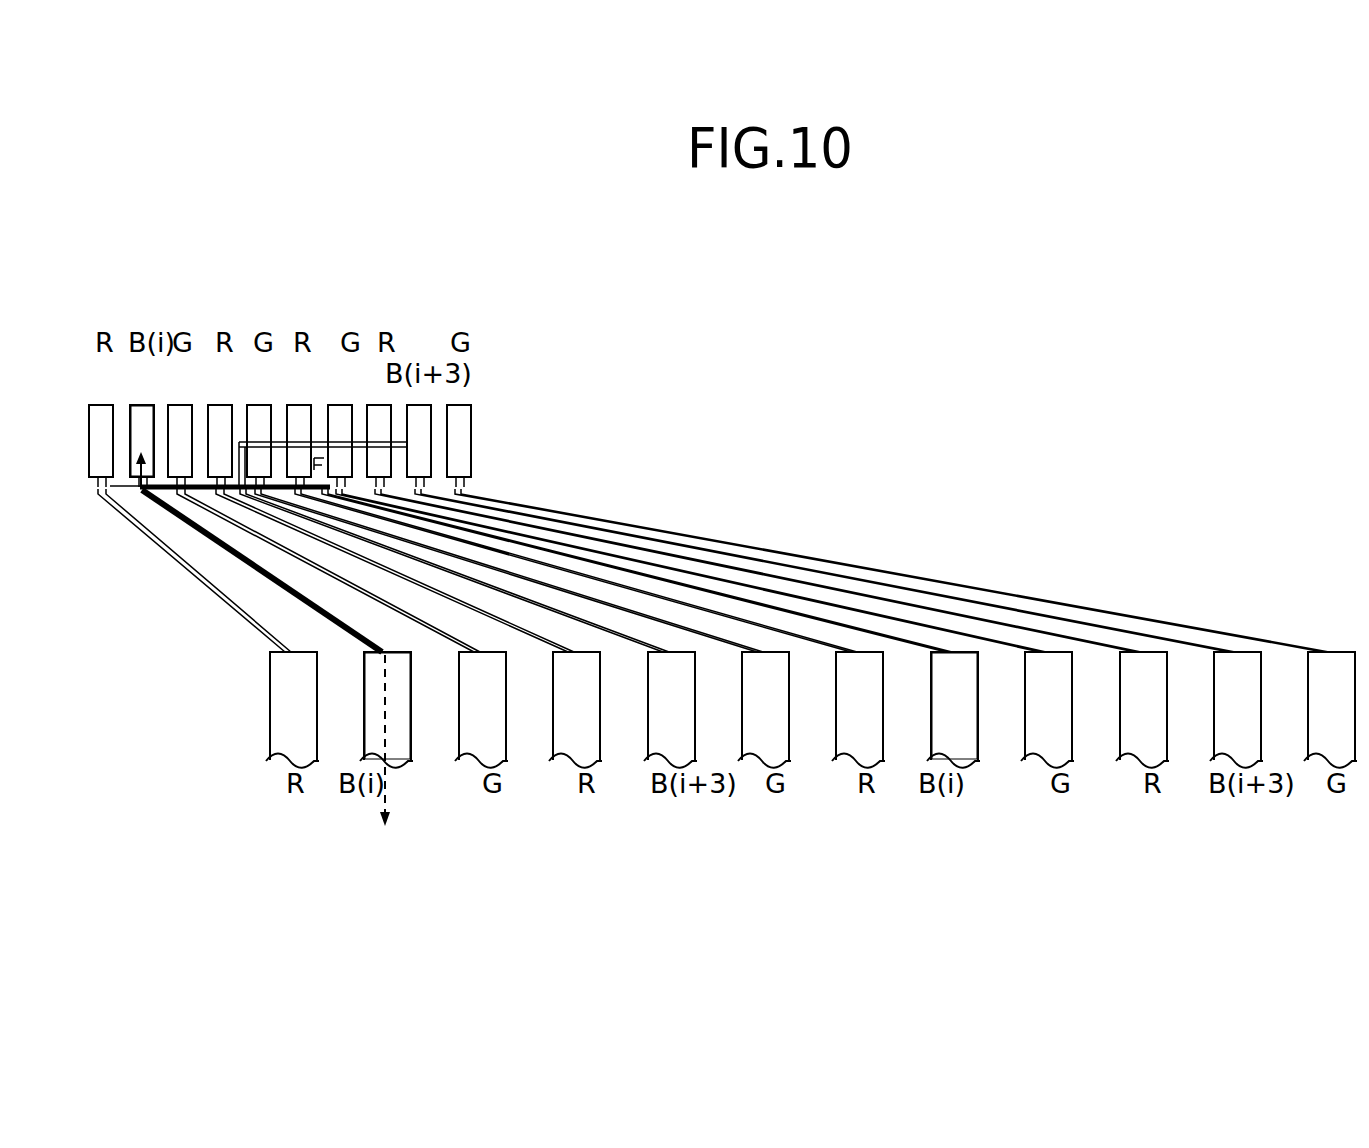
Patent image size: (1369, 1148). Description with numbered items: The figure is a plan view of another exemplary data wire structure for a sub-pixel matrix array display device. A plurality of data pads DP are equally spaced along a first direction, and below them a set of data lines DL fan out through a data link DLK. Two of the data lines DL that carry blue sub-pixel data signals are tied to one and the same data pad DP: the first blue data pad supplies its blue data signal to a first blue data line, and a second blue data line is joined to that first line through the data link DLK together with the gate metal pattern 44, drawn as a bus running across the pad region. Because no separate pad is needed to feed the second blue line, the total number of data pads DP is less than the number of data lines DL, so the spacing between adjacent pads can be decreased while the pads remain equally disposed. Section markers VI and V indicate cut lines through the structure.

The gate metal pattern 44 is at (318, 441).
The data pads DP is at (470, 447).
The data link DLK is at (159, 553).
The data lines DL is at (270, 701).
The section line VI is at (207, 504).
The section line V is at (263, 638).